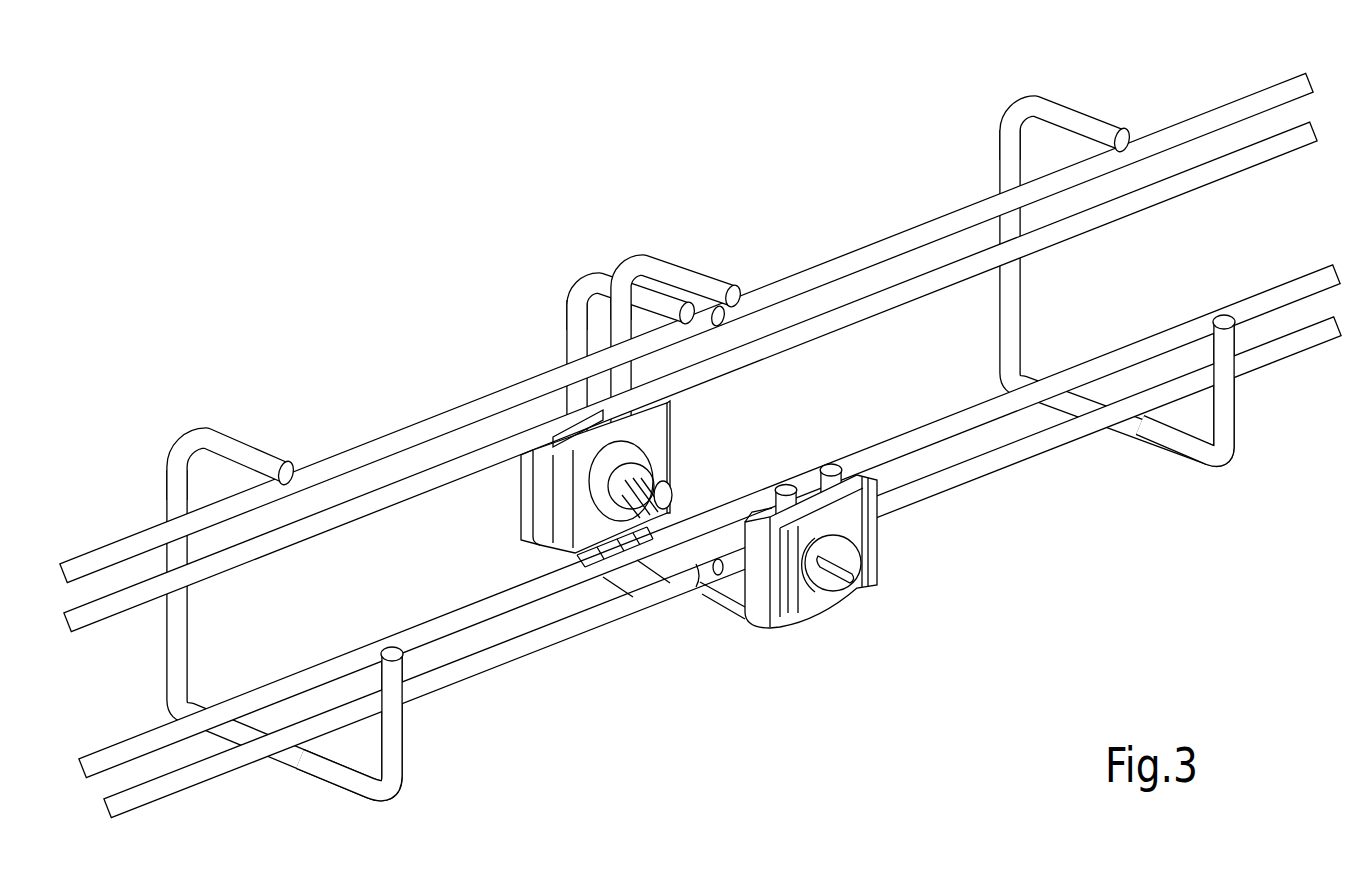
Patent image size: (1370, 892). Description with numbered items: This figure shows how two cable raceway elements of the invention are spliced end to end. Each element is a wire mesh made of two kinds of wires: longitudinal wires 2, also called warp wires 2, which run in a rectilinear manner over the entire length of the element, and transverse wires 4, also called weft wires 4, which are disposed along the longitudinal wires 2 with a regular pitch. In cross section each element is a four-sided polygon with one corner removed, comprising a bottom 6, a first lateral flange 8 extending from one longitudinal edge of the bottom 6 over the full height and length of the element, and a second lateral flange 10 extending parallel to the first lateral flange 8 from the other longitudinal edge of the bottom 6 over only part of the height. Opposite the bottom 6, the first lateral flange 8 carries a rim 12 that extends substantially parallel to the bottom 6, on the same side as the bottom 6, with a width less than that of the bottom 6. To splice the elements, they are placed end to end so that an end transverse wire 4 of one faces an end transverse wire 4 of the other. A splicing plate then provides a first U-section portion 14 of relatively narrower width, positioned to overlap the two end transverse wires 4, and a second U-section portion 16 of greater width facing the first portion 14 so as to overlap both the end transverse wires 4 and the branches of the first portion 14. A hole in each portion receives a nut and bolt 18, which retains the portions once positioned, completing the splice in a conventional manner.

The longitudinal wire 2 is at (414, 470).
The transverse wire 4 is at (385, 787).
The bottom 6 is at (310, 772).
The first lateral flange 8 is at (173, 657).
The second lateral flange 10 is at (393, 737).
The rim 12 is at (235, 452).
The first U-section portion 14 is at (867, 520).
The second U-section portion 16 is at (652, 427).
The nut and bolt 18 is at (660, 460).